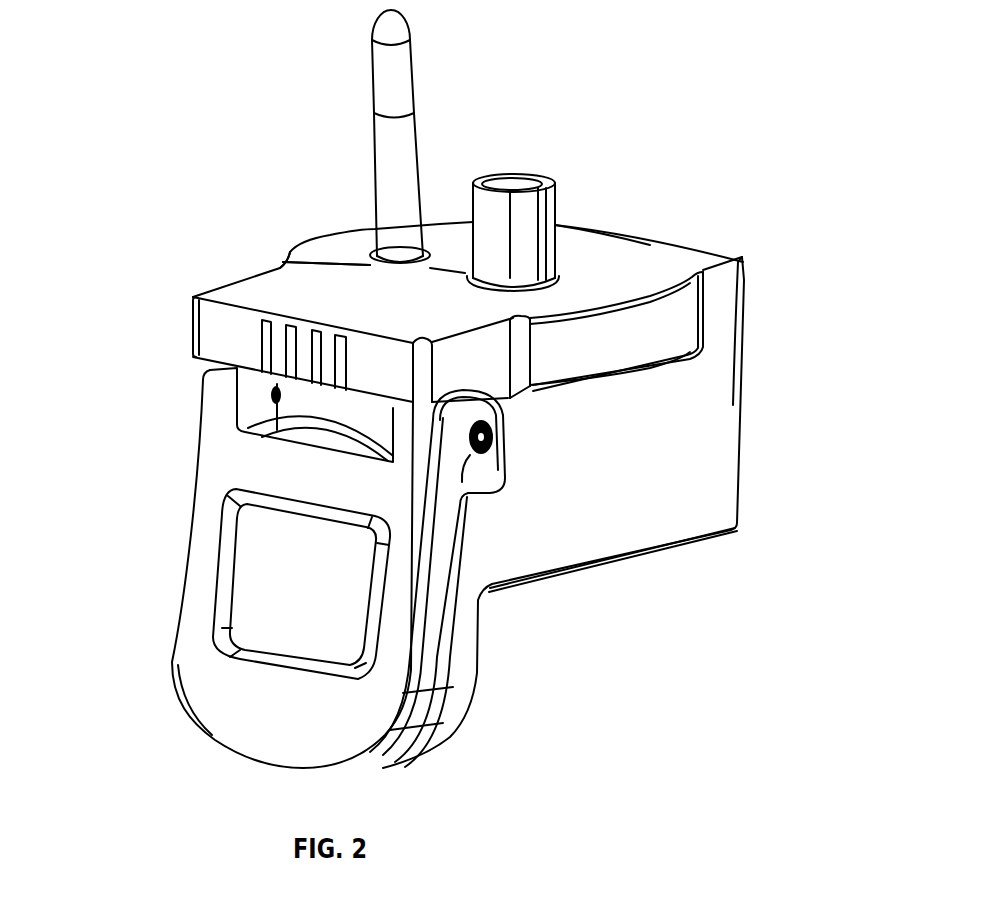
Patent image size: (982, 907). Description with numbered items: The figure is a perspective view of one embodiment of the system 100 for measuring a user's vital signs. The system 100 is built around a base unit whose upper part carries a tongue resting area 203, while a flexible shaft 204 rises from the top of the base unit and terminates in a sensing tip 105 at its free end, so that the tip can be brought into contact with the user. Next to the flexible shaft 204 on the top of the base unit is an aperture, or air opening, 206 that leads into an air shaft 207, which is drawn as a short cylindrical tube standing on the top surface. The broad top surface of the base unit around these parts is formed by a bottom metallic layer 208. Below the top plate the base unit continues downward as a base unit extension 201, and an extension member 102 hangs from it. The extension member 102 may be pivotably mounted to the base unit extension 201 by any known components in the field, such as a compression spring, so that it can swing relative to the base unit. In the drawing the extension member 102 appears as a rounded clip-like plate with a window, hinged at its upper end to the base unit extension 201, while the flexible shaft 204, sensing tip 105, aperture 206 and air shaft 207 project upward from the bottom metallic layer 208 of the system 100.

The system 100 is at (658, 500).
The extension member 102 is at (218, 663).
The sensing tip 105 is at (382, 62).
The base unit extension 201 is at (460, 625).
The tongue resting area 203 is at (285, 262).
The flexible shaft 204 is at (399, 167).
The aperture (air opening) 206 is at (508, 175).
The air shaft 207 is at (553, 192).
The bottom metallic layer 208 is at (600, 271).